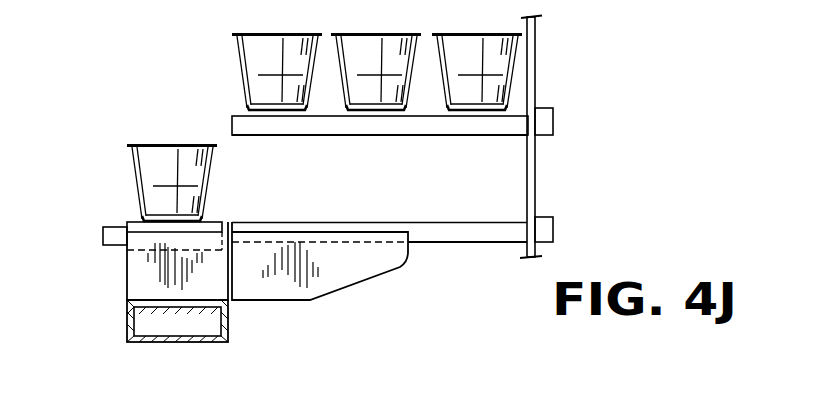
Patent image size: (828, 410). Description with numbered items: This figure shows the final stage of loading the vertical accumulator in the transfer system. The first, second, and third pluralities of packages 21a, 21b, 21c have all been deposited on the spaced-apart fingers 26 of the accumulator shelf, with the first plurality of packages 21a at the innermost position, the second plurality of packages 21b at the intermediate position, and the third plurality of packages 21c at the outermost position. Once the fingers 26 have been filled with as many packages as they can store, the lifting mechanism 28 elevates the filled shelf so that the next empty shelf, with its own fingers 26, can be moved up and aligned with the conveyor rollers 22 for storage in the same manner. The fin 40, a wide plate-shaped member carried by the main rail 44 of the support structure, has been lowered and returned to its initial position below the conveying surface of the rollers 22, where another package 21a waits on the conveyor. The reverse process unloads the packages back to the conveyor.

The first plurality of packages 21a is at (324, 128).
The second plurality of packages 21b is at (376, 73).
The third plurality of packages 21c is at (277, 73).
The rollers 22 is at (138, 223).
The fingers 26 is at (430, 125).
The lifting mechanism 28 is at (535, 163).
The fin 40 is at (142, 272).
The main rail 44 is at (130, 328).